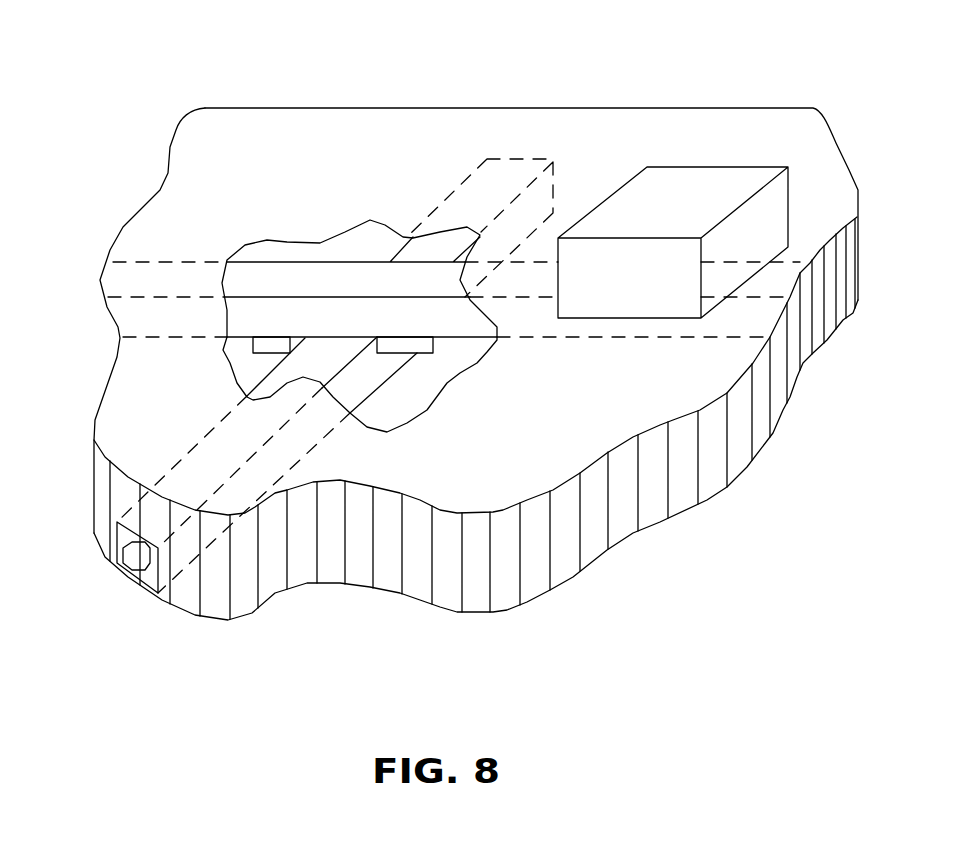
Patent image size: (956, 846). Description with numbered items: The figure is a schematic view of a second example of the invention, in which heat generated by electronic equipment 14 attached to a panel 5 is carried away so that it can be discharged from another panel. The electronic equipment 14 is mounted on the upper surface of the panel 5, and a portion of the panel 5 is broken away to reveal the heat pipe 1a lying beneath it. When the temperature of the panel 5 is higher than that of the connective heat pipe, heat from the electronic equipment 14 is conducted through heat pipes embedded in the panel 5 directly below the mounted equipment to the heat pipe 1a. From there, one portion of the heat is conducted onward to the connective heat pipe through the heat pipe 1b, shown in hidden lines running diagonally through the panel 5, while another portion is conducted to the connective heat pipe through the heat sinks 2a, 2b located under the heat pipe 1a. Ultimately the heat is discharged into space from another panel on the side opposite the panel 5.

The heat pipe 1a is at (277, 278).
The heat pipe 1b is at (213, 463).
The heat sink 2a is at (400, 343).
The heat sink 2b is at (253, 353).
The panel 5 is at (393, 167).
The electronic equipment 14 is at (689, 195).